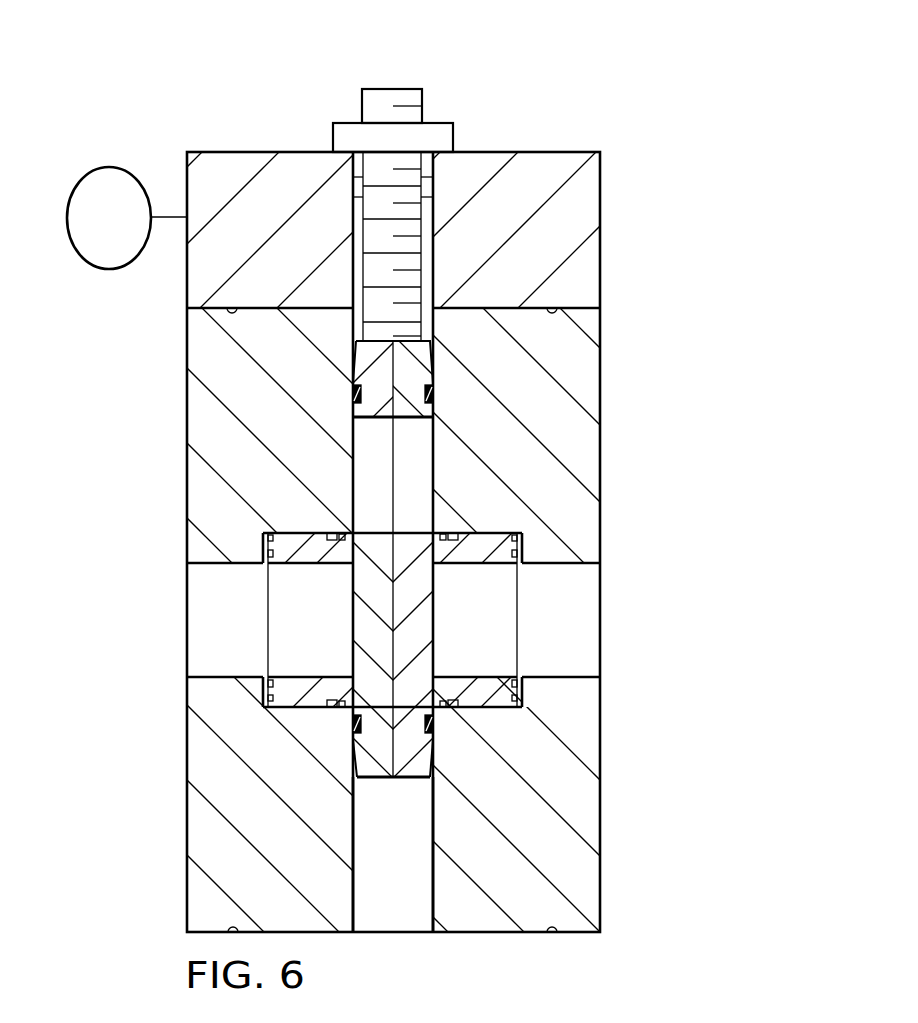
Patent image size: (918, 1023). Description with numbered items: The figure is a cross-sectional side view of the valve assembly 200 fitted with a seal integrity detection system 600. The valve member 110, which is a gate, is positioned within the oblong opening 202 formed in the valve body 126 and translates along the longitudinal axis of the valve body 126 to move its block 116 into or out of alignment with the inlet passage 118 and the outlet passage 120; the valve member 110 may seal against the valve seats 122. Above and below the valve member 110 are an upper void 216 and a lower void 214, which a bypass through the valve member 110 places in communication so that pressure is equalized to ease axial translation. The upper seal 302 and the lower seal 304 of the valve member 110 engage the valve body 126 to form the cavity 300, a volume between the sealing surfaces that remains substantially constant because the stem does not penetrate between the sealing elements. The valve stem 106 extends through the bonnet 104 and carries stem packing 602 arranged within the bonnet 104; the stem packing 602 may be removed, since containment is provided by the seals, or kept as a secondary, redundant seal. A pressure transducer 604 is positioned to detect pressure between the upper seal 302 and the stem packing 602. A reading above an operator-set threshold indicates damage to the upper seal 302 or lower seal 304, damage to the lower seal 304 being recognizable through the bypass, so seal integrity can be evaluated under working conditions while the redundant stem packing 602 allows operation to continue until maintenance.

The valve assembly 200 is at (551, 58).
The bonnet 104 is at (592, 204).
The valve body 126 is at (592, 803).
The pressure transducer 604 is at (107, 178).
The seal integrity detection system 600 is at (303, 131).
The stem packing 602 is at (427, 204).
The valve stem 106 is at (427, 276).
The upper void 216 is at (353, 318).
The oblong opening 202 is at (353, 329).
The cavity 300 is at (444, 476).
The upper seal 302 is at (434, 392).
The block 116 is at (359, 619).
The inlet passage 118 is at (194, 622).
The outlet passage 120 is at (592, 621).
The valve seats 122 is at (463, 554).
The lower seal 304 is at (352, 723).
The valve member 110 is at (410, 769).
The lower void 214 is at (394, 923).